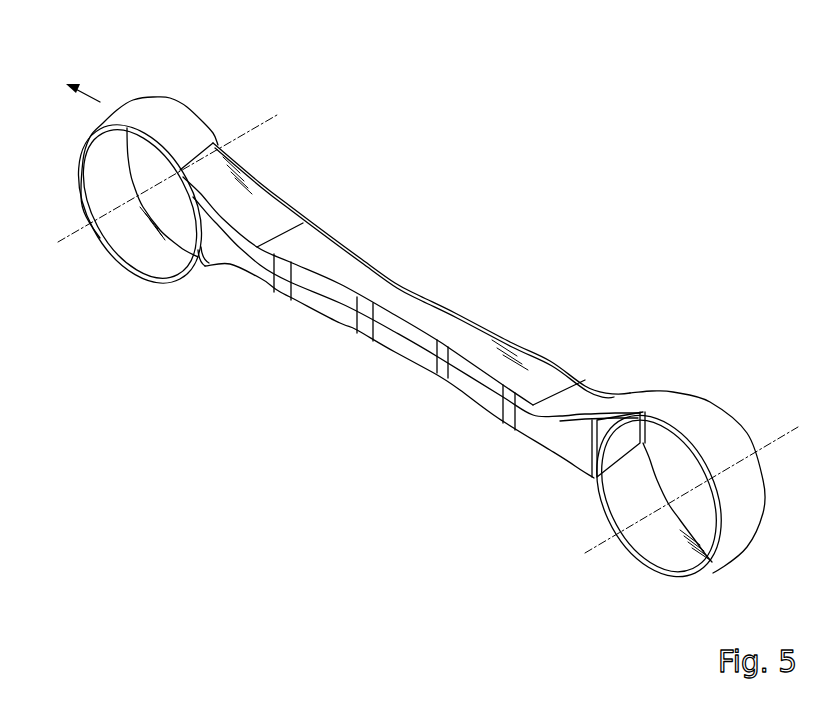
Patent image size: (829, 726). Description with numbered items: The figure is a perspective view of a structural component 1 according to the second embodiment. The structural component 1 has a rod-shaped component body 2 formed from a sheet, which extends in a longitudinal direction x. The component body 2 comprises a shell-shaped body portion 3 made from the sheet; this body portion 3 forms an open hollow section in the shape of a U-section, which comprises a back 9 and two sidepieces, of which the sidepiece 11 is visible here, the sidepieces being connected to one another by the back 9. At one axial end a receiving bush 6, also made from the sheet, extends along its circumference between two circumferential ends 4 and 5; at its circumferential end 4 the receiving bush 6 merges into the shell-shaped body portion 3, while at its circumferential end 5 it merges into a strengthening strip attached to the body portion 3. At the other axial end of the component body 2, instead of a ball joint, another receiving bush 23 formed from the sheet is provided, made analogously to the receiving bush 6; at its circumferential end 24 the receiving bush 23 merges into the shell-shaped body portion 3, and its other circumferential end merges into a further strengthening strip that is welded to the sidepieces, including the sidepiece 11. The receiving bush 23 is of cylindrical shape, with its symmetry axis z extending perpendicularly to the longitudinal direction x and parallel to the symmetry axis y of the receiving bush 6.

The structural component 1 is at (519, 128).
The component body 2 is at (508, 332).
The shell-shaped body portion 3 is at (402, 297).
The circumferential end 4 is at (633, 400).
The circumferential end 5 is at (600, 542).
The receiving bush 6 is at (668, 532).
The back 9 is at (440, 322).
The sidepiece 11 is at (428, 531).
The receiving bush 23 is at (138, 270).
The circumferential end 24 is at (405, 204).
The longitudinal direction x is at (94, 56).
The symmetry axis y is at (763, 443).
The symmetry axis z is at (83, 225).